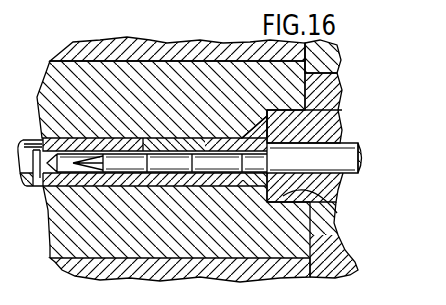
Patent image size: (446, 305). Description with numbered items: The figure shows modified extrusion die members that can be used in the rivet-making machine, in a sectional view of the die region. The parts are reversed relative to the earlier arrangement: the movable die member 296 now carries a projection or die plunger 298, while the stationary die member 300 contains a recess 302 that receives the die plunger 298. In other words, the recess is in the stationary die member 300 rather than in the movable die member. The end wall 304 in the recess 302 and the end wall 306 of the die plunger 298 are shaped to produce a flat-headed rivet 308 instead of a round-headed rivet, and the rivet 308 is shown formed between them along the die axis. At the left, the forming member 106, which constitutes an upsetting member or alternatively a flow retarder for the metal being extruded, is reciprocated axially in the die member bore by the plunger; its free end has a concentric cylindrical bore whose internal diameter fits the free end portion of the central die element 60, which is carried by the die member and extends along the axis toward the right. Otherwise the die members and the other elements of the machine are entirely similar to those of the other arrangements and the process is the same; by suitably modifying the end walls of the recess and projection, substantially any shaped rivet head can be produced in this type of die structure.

The central die element 60 is at (354, 174).
The forming member 106 is at (33, 187).
The die member 296 is at (327, 231).
The die plunger 298 is at (327, 232).
The stationary die member 300 is at (153, 245).
The recess 302 is at (286, 117).
The end wall 304 is at (260, 183).
The end wall 306 is at (339, 121).
The flat-headed rivet 308 is at (172, 173).